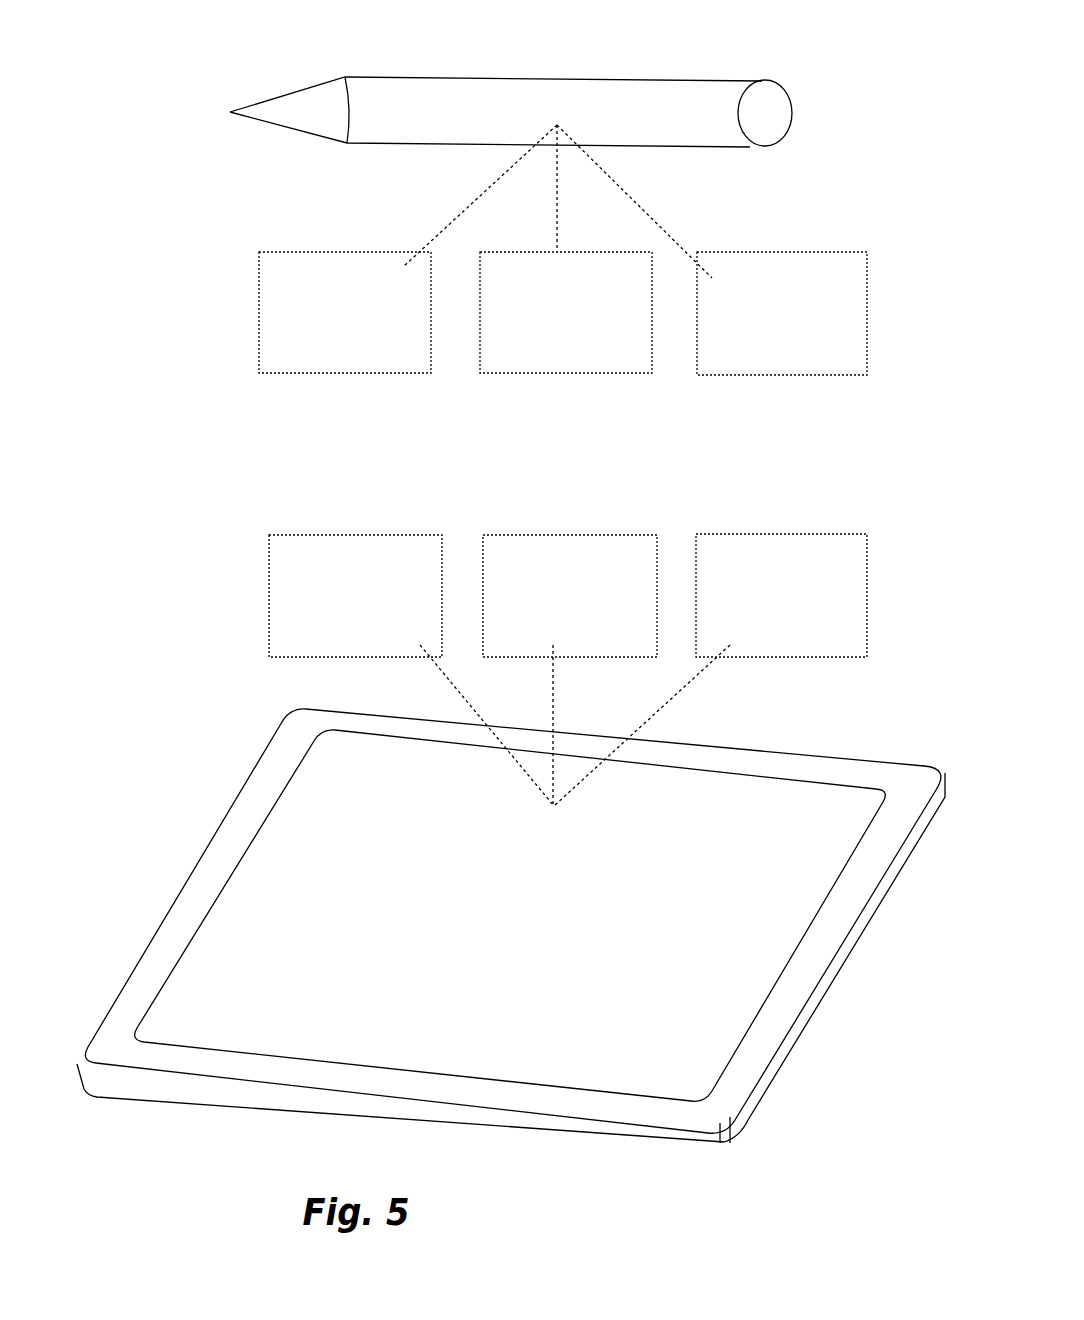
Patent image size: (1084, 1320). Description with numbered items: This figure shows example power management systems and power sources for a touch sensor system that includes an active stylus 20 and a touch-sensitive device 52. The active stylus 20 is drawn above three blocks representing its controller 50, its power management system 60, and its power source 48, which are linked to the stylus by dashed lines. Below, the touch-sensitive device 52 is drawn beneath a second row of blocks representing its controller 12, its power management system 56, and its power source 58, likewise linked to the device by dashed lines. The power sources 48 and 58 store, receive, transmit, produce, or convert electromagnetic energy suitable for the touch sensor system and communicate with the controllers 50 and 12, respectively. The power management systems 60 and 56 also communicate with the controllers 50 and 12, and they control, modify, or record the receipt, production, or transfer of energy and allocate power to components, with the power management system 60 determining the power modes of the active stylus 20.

The active stylus 20 is at (392, 96).
The controller 50 is at (264, 328).
The power management system 60 is at (527, 373).
The power source 48 is at (868, 342).
The controller 12 is at (283, 614).
The power management system 56 is at (642, 554).
The power source 58 is at (869, 637).
The touch-sensitive device 52 is at (117, 1003).